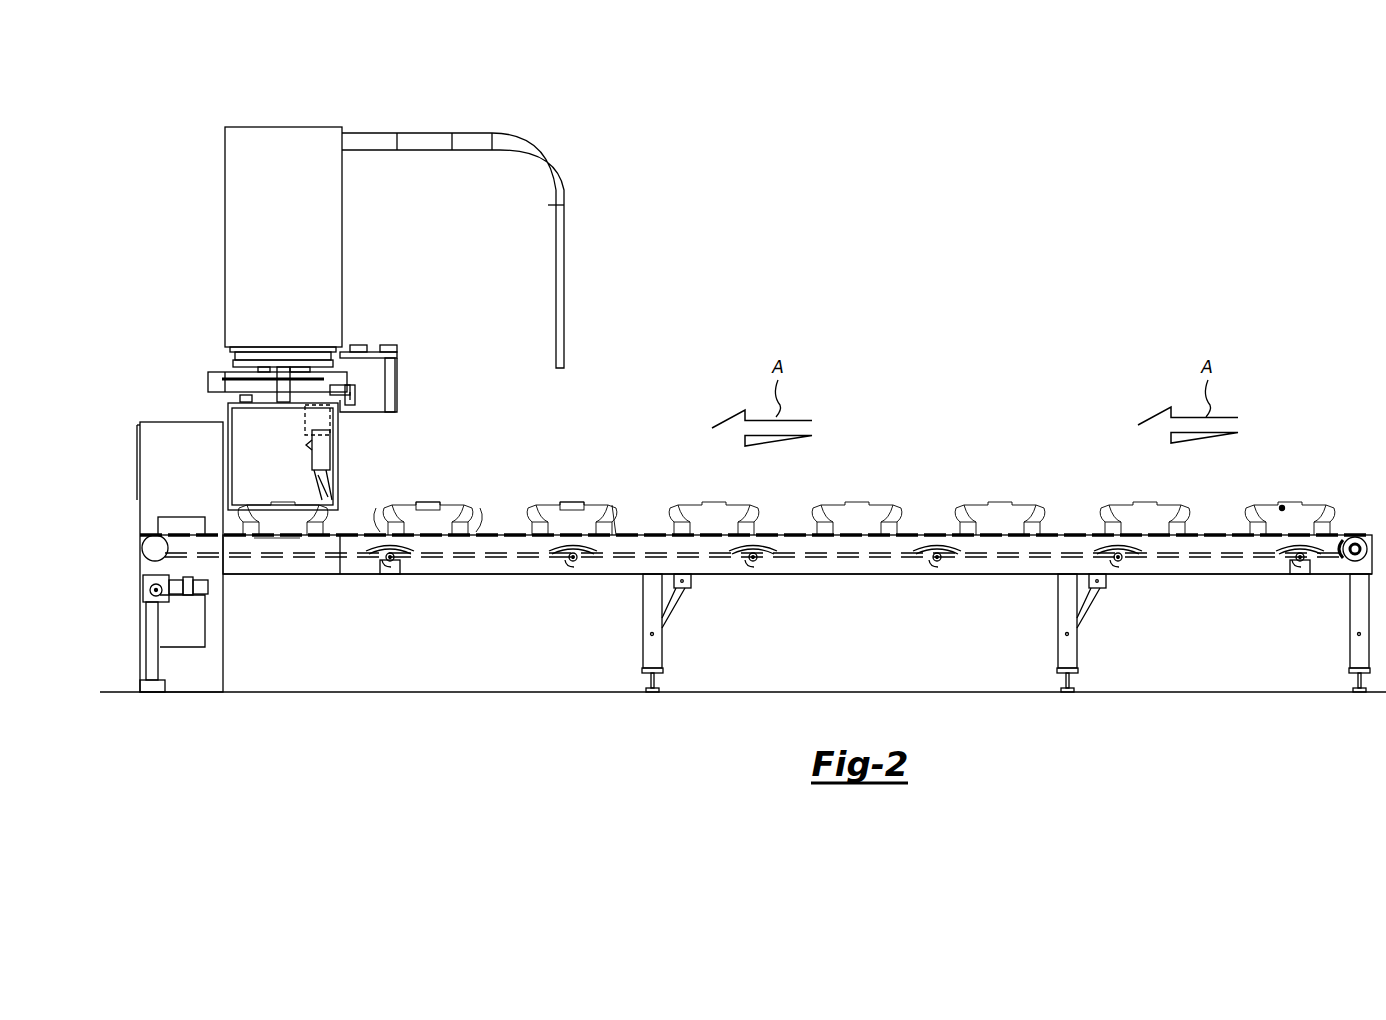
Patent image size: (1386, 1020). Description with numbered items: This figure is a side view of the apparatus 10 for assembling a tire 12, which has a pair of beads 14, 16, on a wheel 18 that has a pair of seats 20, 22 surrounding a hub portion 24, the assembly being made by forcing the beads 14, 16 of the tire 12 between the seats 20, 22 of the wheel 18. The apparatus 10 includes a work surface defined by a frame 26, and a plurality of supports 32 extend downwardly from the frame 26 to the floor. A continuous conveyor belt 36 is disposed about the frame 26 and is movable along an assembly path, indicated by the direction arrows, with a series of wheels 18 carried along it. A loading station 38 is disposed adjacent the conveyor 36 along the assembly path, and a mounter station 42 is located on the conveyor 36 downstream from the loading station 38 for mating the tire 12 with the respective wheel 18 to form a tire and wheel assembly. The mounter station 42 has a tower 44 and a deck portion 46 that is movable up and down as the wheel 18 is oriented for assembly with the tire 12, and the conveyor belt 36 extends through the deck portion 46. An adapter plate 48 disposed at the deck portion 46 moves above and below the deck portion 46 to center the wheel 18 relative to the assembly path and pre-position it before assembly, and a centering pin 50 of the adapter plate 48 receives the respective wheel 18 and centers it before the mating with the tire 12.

The apparatus 10 is at (871, 314).
The tire 12 is at (478, 518).
The bead 14 is at (462, 502).
The bead 16 is at (460, 532).
The wheel 18 is at (424, 504).
The seat 20 is at (612, 505).
The seat 22 is at (612, 540).
The hub portion 24 is at (572, 500).
The frame 26 is at (818, 562).
The supports 32 is at (654, 650).
The conveyor belt 36 is at (358, 558).
The loading station 38 is at (1331, 471).
The mounter station 42 is at (147, 164).
The tower 44 is at (296, 249).
The deck portion 46 is at (257, 565).
The adapter plate 48 is at (292, 540).
The centering pin 50 is at (285, 525).